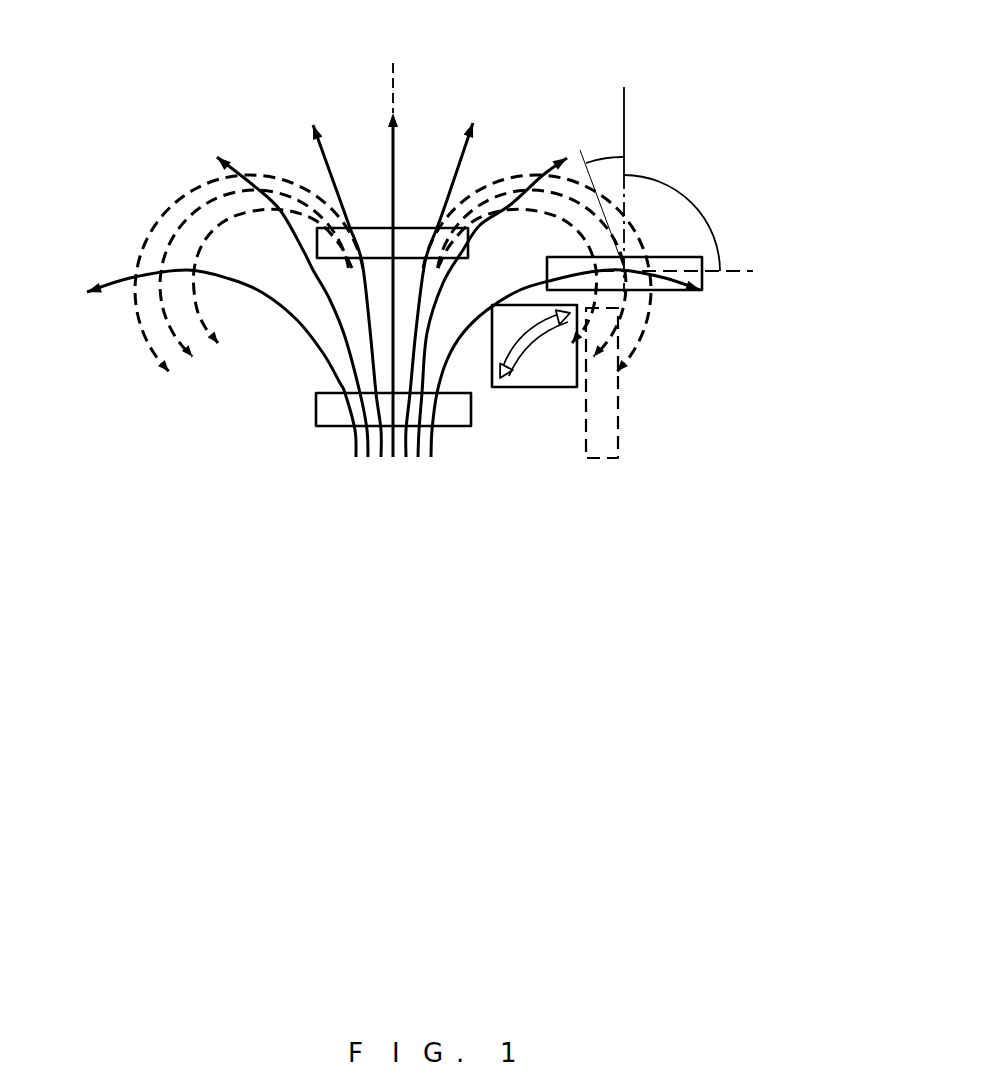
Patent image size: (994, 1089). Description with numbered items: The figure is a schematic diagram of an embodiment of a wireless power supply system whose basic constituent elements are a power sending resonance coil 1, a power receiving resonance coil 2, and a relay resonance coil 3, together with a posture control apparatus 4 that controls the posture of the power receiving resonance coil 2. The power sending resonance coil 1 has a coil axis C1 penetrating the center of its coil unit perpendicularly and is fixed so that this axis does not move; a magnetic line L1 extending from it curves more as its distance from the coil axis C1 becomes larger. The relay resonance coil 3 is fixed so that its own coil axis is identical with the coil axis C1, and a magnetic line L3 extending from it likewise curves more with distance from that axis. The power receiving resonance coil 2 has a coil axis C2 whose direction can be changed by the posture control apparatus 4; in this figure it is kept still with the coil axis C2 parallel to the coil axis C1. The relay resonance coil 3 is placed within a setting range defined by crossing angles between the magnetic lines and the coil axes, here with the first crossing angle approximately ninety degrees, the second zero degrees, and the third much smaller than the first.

The power sending resonance coil 1 is at (316, 426).
The power receiving resonance coil 2 is at (702, 281).
The relay resonance coil 3 is at (410, 228).
The posture control apparatus 4 is at (550, 387).
The magnetic line L1 is at (318, 268).
The magnetic line L3 is at (190, 213).
The coil axis C1 is at (393, 75).
The coil axis C2 is at (624, 98).